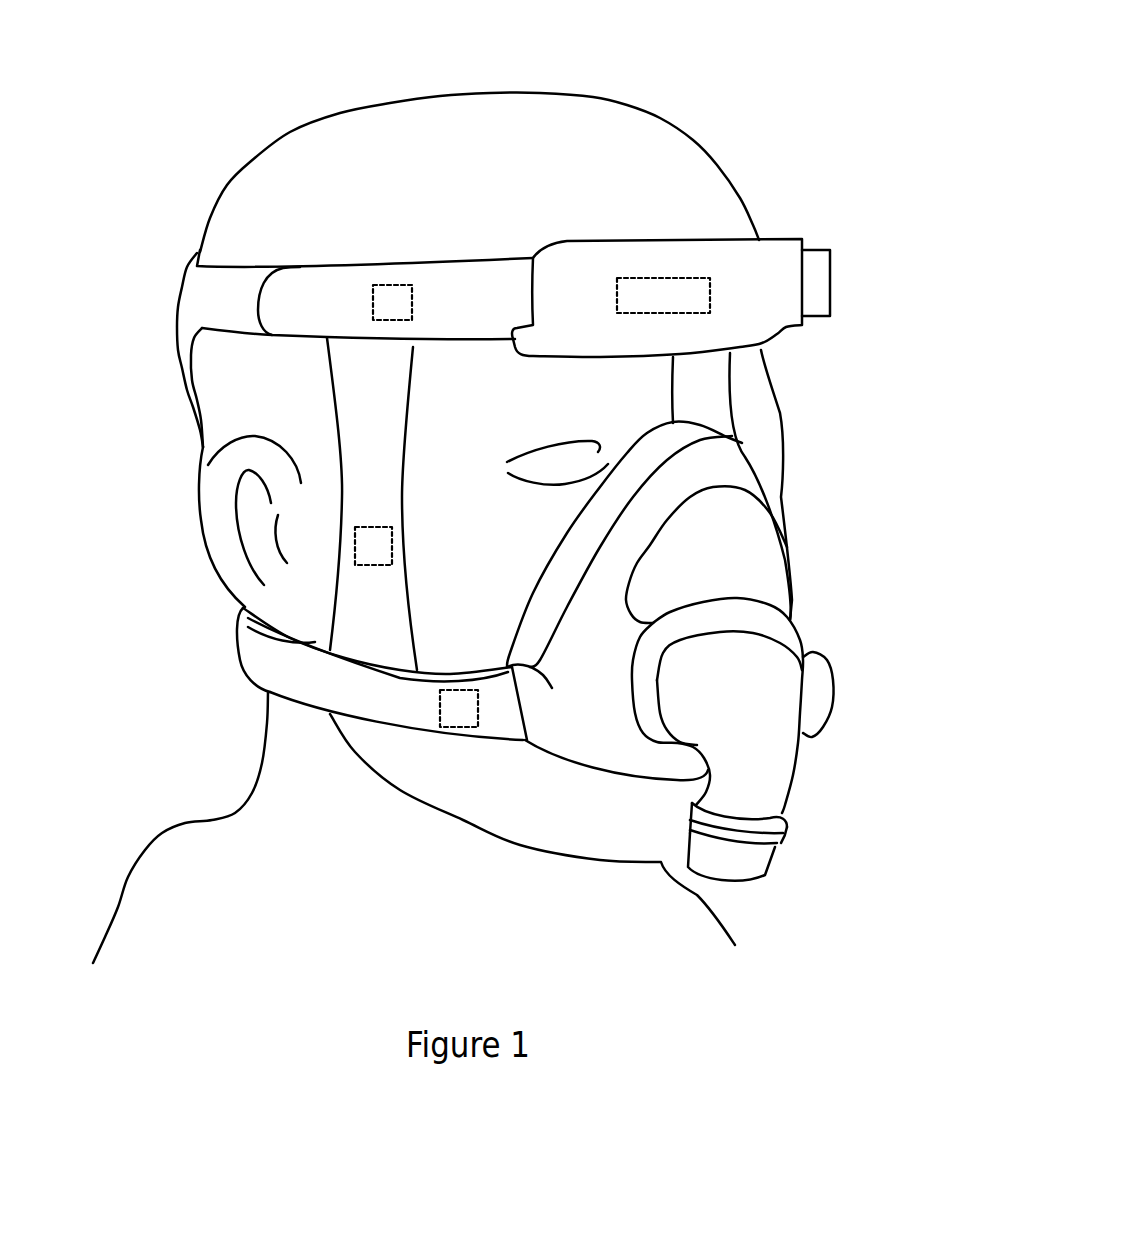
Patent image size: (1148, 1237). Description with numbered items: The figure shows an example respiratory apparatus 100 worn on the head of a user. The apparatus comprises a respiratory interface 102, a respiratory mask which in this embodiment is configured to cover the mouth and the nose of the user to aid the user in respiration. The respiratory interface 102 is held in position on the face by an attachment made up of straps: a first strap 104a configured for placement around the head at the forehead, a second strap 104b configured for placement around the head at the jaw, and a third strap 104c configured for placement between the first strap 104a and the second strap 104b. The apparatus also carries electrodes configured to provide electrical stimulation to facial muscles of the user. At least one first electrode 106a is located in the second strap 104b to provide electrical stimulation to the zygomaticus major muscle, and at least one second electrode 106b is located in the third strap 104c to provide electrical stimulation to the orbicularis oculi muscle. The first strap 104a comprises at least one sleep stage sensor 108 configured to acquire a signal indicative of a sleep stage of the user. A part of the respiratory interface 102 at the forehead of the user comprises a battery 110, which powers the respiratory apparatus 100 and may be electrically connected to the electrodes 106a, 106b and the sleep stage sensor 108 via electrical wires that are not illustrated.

The respiratory apparatus 100 is at (808, 197).
The respiratory interface 102 is at (748, 542).
The first strap 104a is at (459, 280).
The second strap 104b is at (322, 691).
The third strap 104c is at (352, 410).
The first electrode 106a is at (468, 727).
The second electrode 106b is at (357, 540).
The sleep stage sensor 108 is at (370, 290).
The battery 110 is at (663, 277).